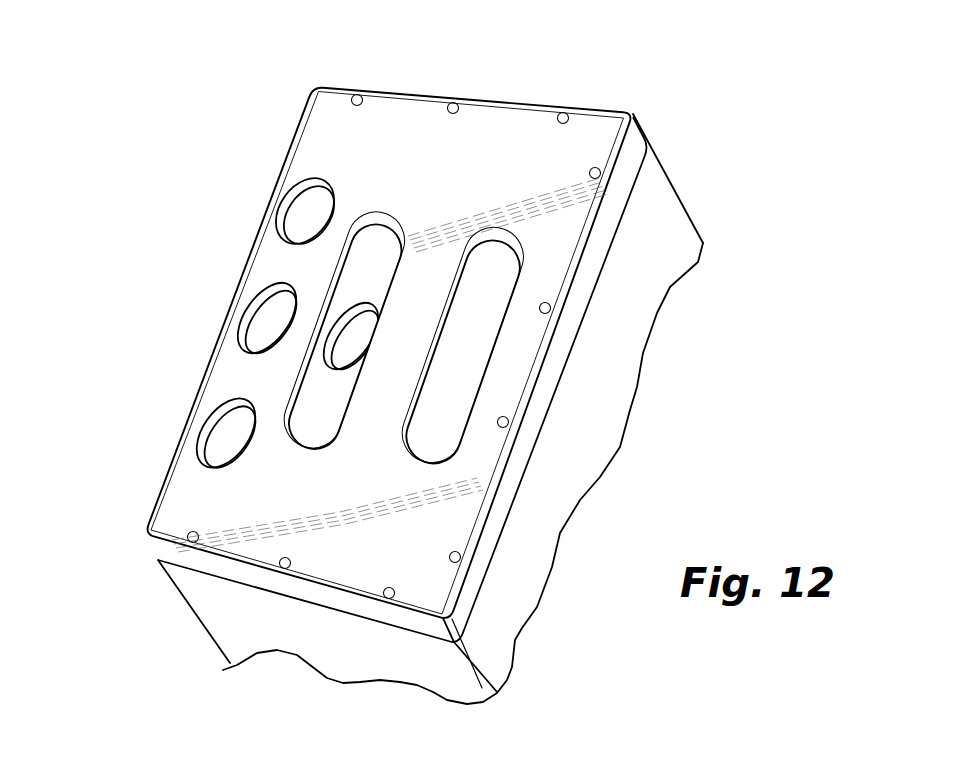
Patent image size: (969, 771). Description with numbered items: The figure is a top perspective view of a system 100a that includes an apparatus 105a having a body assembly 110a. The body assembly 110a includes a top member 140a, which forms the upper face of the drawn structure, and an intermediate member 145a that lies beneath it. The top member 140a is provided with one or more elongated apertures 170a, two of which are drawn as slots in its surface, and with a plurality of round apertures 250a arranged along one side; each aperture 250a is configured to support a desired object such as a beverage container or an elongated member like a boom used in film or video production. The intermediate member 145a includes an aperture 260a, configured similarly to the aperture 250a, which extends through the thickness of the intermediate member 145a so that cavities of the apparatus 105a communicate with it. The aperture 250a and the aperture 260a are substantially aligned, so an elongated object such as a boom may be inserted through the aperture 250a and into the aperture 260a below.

The system 100a is at (193, 151).
The apparatus 105a is at (197, 225).
The body assembly 110a is at (496, 84).
The top member 140a is at (597, 135).
The intermediate member 145a is at (312, 420).
The aperture 170a is at (377, 245).
The aperture 250a is at (302, 197).
The aperture 260a is at (354, 336).